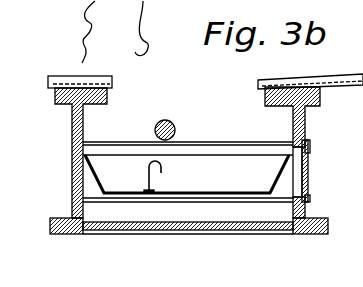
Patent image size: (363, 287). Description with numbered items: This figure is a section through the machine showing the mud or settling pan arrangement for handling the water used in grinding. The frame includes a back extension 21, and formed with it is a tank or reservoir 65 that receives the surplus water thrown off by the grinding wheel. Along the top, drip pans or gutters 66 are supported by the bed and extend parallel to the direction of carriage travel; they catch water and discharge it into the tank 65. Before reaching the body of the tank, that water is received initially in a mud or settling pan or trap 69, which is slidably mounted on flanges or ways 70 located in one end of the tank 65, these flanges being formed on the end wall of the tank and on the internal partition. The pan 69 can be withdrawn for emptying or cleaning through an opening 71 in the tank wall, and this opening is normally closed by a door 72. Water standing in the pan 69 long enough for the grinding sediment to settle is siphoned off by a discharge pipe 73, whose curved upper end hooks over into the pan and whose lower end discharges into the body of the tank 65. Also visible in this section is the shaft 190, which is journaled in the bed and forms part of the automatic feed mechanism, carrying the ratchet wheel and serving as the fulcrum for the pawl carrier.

The drip pans or gutters 66 is at (100, 84).
The back extension 21 is at (72, 150).
The shaft 190 is at (174, 123).
The mud or settling pan 69 is at (243, 168).
The discharge pipe 73 is at (147, 172).
The door 72 is at (307, 165).
The opening 71 is at (297, 185).
The flanges or ways 70 is at (259, 201).
The tank or reservoir 65 is at (168, 211).